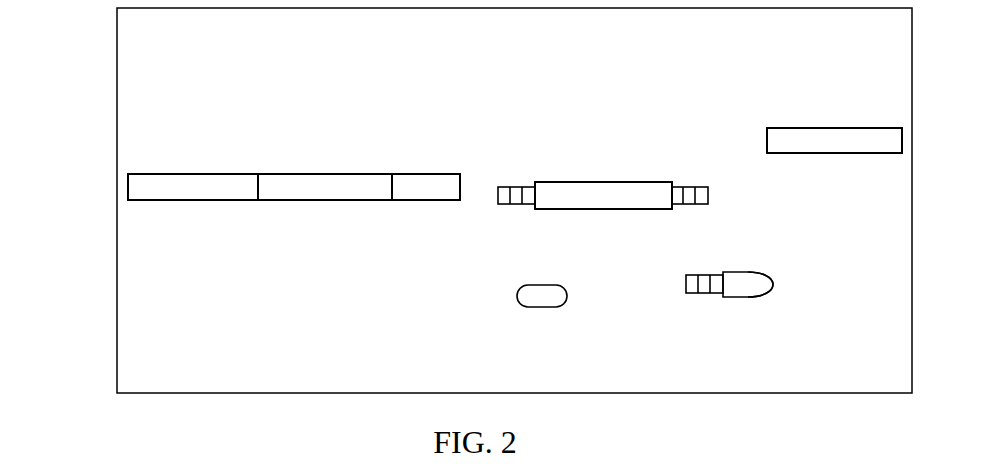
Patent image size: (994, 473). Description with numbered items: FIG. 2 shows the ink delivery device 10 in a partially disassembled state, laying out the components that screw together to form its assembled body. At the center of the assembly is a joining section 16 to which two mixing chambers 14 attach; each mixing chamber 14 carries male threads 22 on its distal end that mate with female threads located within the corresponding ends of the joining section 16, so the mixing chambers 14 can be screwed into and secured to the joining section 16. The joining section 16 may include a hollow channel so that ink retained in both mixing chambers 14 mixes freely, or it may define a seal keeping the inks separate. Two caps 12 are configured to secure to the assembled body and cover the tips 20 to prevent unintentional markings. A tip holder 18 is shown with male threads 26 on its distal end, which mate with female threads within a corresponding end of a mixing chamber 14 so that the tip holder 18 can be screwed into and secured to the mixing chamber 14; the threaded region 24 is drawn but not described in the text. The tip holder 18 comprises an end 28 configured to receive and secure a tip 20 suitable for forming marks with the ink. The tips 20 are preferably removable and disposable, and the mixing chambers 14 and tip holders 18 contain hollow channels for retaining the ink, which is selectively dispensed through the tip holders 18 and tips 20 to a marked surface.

The delivery device 10 is at (106, 77).
The caps 12 is at (515, 165).
The mixing chambers 14 is at (465, 191).
The joining section 16 is at (426, 188).
The tip holders 18 is at (752, 304).
The tips 20 is at (535, 319).
The male threads 22 is at (521, 179).
The second threaded connector 24 is at (698, 180).
The male threads 26 is at (687, 304).
The end 28 is at (808, 266).